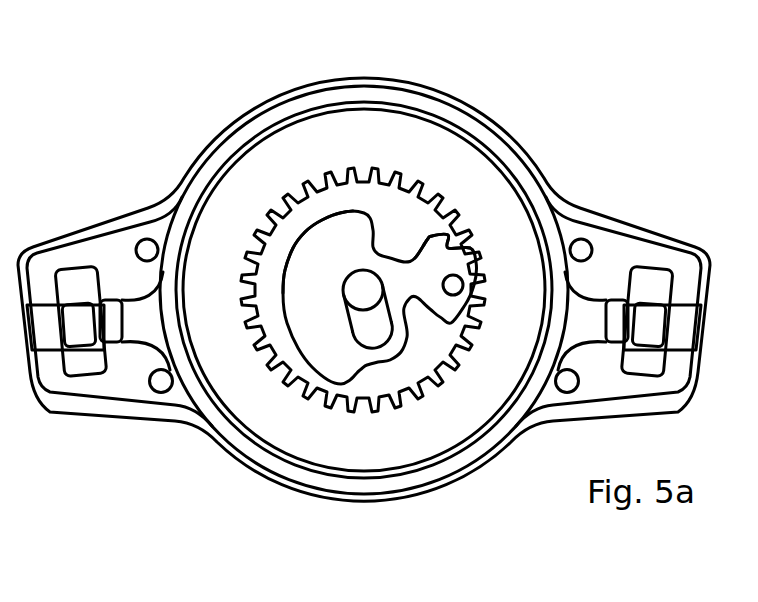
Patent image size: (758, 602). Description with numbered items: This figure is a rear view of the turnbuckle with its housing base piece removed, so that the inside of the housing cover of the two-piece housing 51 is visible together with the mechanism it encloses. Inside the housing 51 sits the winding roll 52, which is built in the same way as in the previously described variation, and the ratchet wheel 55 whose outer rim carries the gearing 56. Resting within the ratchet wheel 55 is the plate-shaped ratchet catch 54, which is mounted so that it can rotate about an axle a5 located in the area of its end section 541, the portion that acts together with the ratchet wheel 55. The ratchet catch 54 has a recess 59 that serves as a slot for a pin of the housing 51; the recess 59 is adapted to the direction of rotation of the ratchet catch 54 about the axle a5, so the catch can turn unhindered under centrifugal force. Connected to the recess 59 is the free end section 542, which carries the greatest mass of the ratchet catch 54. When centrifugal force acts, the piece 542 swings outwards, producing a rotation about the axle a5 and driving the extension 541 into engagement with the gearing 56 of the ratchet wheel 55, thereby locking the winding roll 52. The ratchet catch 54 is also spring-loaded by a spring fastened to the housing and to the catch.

The housing 51 is at (203, 92).
The winding roll 52 is at (238, 437).
The ratchet catch 54 is at (302, 229).
The end section 541 is at (432, 255).
The free end section 542 is at (315, 265).
The ratchet wheel 55 is at (374, 445).
The gearing 56 is at (409, 404).
The recess 59 is at (365, 325).
The axle a5 is at (456, 279).